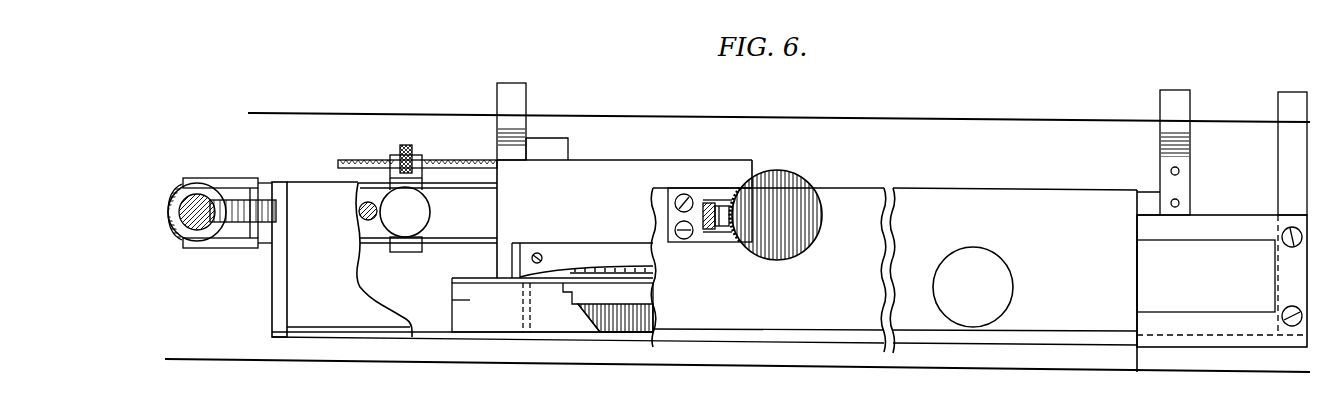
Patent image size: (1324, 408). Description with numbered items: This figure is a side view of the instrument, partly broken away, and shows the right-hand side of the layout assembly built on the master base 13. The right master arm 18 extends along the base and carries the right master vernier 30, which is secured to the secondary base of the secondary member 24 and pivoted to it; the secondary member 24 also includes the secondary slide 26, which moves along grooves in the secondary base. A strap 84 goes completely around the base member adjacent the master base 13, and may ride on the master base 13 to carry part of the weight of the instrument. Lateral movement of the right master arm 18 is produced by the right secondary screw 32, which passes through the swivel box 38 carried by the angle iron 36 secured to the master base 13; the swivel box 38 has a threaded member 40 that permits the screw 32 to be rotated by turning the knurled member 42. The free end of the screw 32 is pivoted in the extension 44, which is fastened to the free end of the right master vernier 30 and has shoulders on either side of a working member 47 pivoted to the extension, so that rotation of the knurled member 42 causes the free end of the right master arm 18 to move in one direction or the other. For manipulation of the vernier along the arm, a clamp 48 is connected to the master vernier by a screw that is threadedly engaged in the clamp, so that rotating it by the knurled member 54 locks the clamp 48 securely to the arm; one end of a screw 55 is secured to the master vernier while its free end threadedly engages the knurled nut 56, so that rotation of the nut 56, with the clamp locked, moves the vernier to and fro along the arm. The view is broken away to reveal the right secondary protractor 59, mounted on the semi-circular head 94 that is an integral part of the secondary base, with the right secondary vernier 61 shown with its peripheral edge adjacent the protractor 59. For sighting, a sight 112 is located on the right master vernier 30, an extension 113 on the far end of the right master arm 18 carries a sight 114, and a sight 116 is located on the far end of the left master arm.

The master base 13 is at (862, 354).
The right master arm 18 is at (426, 260).
The secondary member 24 is at (512, 325).
The secondary slide 26 is at (617, 302).
The right master vernier 30 is at (624, 242).
The right secondary screw 32 is at (712, 232).
The angle iron 36 is at (863, 192).
The swivel box 38 is at (690, 196).
The threaded member 40 is at (722, 228).
The knurled member 42 is at (778, 185).
The extension 44 is at (224, 178).
The working member 47 is at (178, 198).
The clamp 48 is at (390, 160).
The knurled member 54 is at (393, 222).
The screw 55 is at (443, 163).
The knurled nut 56 is at (410, 145).
The right secondary protractor 59 is at (470, 282).
The right secondary vernier 61 is at (582, 268).
The strap 84 is at (555, 336).
The semi-circular head 94 is at (452, 300).
The sight 112 is at (512, 95).
The extension 113 is at (1218, 232).
The sight 114 is at (1290, 94).
The sight 116 is at (1172, 90).